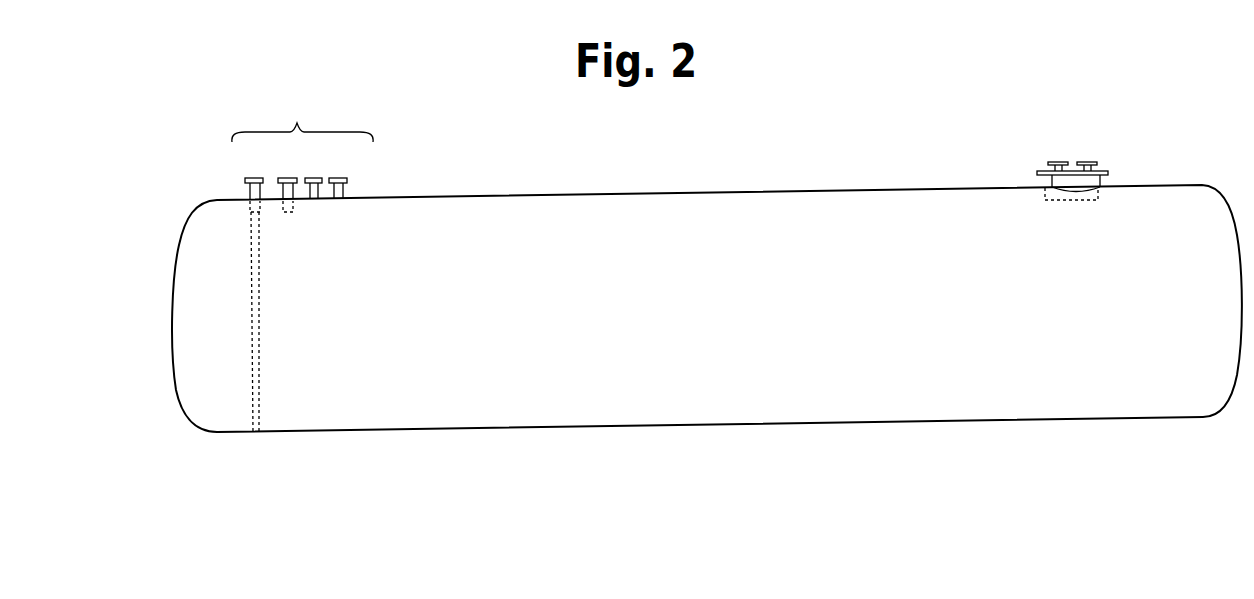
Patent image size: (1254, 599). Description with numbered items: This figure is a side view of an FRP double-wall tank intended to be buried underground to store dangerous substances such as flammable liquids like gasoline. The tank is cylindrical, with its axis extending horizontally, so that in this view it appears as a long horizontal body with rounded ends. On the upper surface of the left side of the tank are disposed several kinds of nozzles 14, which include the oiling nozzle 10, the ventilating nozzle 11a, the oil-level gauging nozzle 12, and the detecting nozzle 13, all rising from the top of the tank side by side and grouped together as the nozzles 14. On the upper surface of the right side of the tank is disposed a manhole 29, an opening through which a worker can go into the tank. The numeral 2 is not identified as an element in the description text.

The tank 2 is at (707, 308).
The oiling nozzle 10 is at (289, 192).
The ventilating nozzle 11a is at (314, 192).
The oil-level gauging nozzle 12 is at (337, 192).
The detecting nozzle 13 is at (257, 192).
The nozzles 14 is at (302, 117).
The manhole 29 is at (1052, 183).